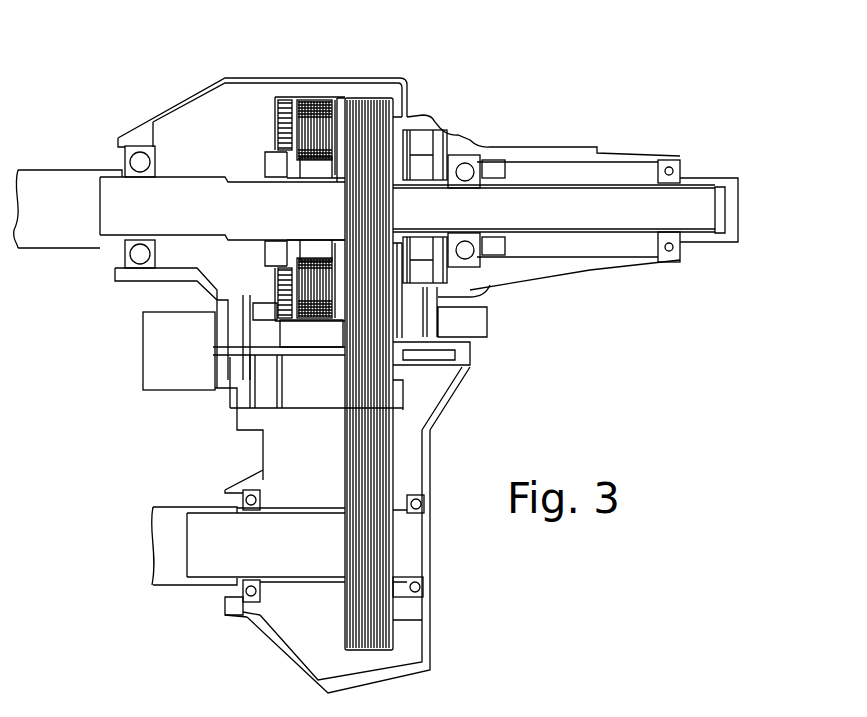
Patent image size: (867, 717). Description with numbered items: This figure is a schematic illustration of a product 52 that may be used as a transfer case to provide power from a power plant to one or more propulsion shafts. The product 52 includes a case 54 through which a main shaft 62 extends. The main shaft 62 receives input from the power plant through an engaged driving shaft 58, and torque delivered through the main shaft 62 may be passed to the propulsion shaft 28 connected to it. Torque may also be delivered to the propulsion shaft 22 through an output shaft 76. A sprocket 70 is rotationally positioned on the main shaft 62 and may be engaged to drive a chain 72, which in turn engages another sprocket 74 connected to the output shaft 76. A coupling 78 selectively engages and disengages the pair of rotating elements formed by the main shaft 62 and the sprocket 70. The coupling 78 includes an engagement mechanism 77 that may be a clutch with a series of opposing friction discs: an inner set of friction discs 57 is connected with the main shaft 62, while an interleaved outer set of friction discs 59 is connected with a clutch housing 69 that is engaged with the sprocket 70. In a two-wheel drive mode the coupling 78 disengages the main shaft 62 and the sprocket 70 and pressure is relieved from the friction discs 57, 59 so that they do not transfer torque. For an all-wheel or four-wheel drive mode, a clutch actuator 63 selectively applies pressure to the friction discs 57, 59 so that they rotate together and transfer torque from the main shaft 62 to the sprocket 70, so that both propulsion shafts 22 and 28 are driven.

The propulsion shaft 22 is at (167, 513).
The propulsion shaft 28 is at (720, 178).
The product 52 is at (528, 108).
The case 54 is at (423, 460).
The inner set of friction discs 57 is at (294, 147).
The driving shaft 58 is at (65, 200).
The outer set of friction discs 59 is at (327, 102).
The main shaft 62 is at (208, 195).
The clutch actuator 63 is at (253, 258).
The clutch housing 69 is at (318, 100).
The sprocket 70 is at (397, 113).
The chain 72 is at (383, 433).
The sprocket 74 is at (393, 623).
The output shaft 76 is at (307, 550).
The engagement mechanism 77 is at (367, 97).
The coupling 78 is at (268, 137).